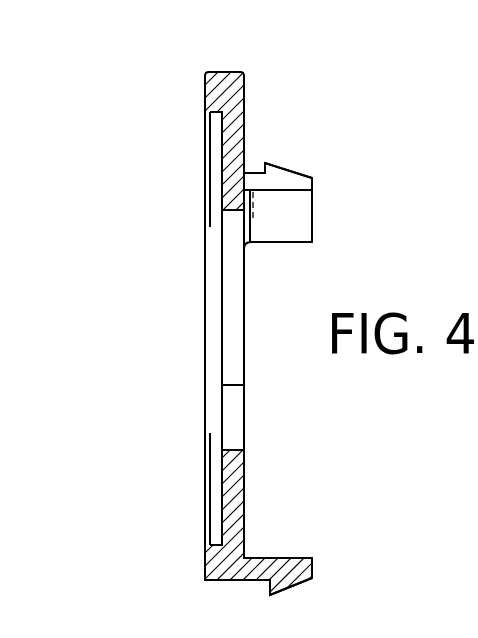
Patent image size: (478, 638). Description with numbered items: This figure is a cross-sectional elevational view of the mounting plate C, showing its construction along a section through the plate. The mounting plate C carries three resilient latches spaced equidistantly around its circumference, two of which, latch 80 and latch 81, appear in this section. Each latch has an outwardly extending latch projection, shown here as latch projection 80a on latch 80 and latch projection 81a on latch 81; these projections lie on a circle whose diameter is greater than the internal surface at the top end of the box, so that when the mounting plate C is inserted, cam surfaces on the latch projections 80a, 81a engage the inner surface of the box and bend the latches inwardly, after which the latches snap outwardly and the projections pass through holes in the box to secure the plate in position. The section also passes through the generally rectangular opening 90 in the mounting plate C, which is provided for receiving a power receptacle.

The resilient latch 80 is at (292, 556).
The latch projection 80a is at (302, 583).
The resilient latch 81 is at (293, 217).
The latch projection 81a is at (282, 170).
The rectangular opening 90 is at (233, 214).
The mounting plate C is at (286, 120).